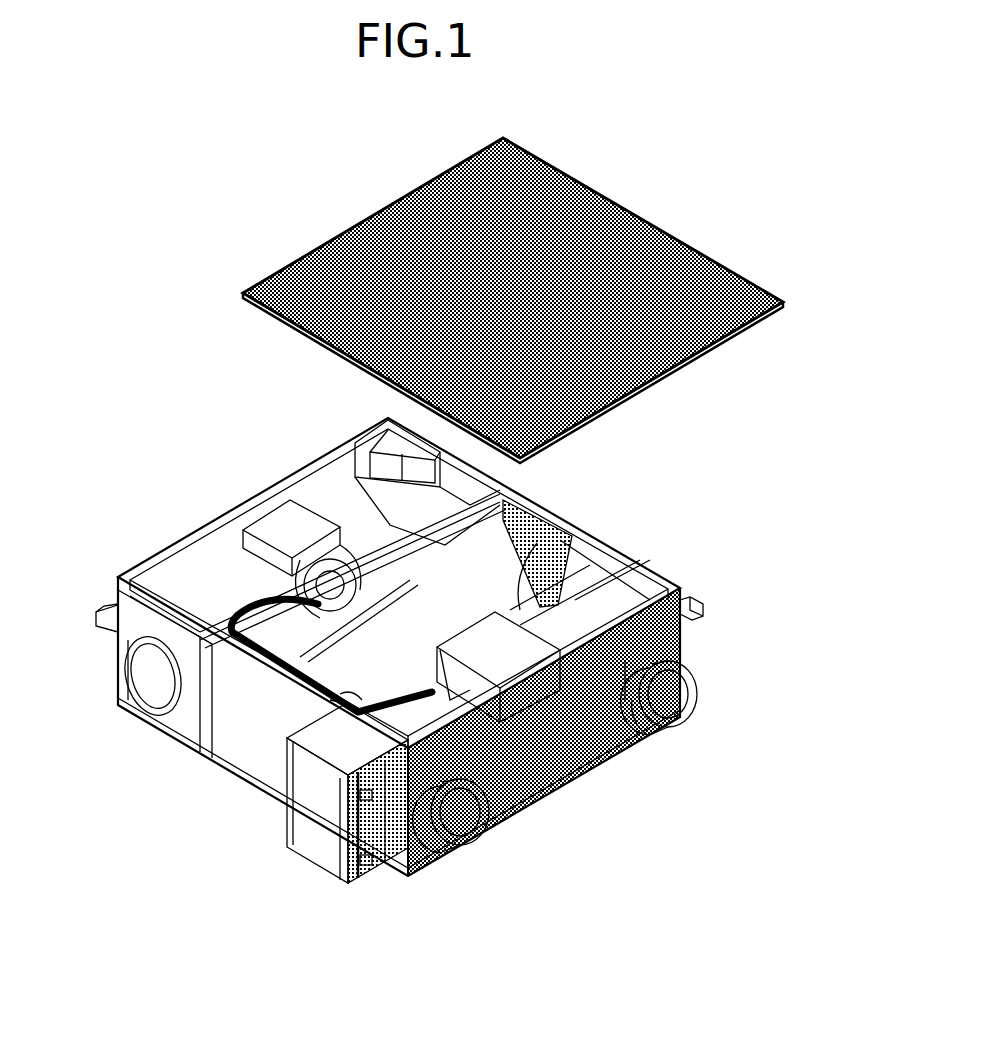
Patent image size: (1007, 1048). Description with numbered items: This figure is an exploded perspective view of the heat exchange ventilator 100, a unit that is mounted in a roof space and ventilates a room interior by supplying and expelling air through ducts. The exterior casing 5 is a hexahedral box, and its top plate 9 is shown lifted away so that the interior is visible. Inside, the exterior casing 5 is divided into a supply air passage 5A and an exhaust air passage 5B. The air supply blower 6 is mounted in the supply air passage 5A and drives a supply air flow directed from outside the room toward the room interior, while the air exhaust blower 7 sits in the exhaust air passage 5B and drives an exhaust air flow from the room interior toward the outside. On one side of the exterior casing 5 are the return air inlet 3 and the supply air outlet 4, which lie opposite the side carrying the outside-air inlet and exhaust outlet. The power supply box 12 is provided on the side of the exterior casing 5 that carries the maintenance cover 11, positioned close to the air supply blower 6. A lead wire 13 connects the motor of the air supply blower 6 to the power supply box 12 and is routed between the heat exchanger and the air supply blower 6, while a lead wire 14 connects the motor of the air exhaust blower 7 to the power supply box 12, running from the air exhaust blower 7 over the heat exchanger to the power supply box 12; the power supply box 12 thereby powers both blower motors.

The heat exchange ventilator 100 is at (122, 376).
The top plate 9 is at (312, 249).
The exterior casing 5 is at (625, 552).
The supply air passage 5A is at (537, 537).
The exhaust air passage 5B is at (335, 507).
The air exhaust blower 7 is at (273, 520).
The lead wire 14 is at (237, 613).
The air supply blower 6 is at (515, 652).
The return air inlet 3 is at (670, 717).
The supply air outlet 4 is at (468, 835).
The maintenance cover 11 is at (232, 755).
The power supply box 12 is at (320, 848).
The lead wire 13 is at (357, 705).